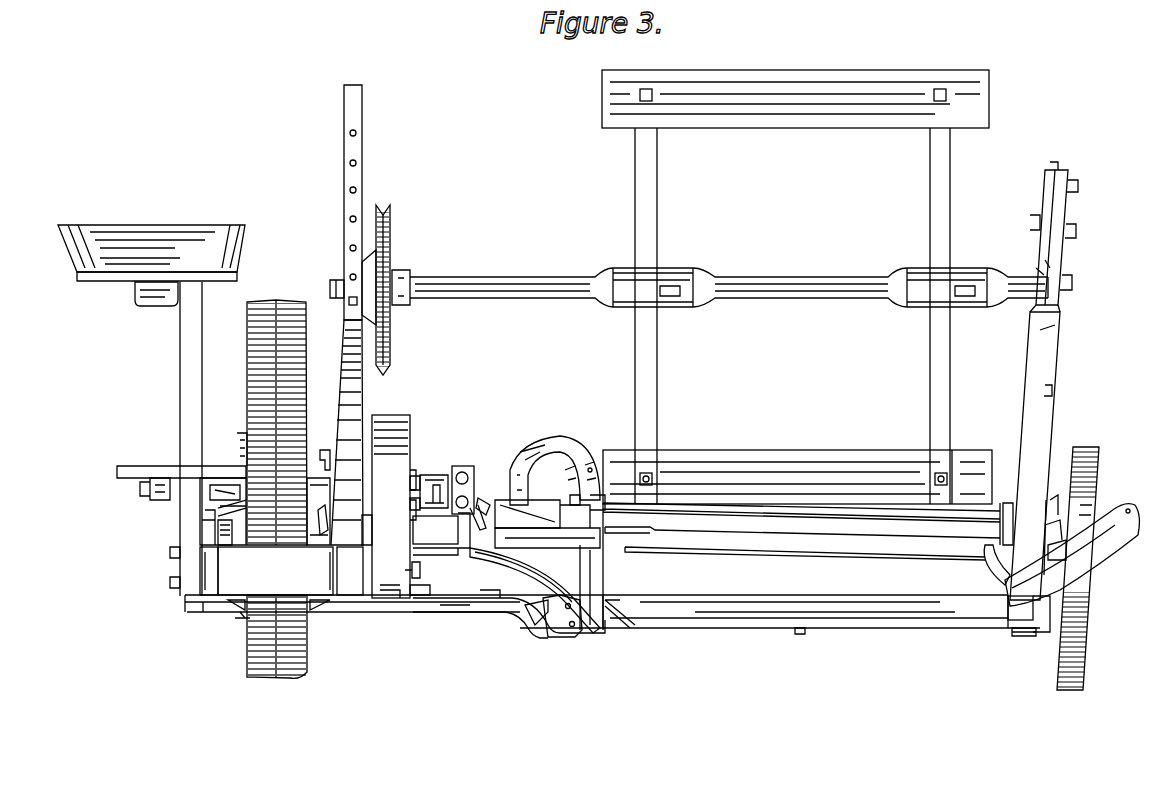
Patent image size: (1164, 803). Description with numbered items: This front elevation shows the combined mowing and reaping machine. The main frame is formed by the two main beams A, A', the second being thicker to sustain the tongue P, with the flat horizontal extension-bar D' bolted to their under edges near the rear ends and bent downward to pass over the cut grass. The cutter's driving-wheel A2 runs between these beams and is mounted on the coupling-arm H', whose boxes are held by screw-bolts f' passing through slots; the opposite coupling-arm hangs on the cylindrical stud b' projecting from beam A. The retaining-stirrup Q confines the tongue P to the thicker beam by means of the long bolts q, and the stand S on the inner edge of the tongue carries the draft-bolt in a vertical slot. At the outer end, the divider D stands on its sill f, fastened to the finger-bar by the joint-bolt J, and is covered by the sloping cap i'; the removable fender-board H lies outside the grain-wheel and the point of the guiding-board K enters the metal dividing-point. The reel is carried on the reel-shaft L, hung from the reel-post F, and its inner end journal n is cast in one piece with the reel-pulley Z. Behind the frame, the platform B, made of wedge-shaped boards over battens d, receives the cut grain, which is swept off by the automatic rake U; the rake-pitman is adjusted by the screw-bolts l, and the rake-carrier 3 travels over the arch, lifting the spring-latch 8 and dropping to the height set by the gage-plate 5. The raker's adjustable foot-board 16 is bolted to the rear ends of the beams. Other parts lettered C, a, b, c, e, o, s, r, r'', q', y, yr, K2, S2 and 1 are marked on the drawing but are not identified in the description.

The cradle C is at (151, 253).
The post a is at (168, 439).
The bar b is at (182, 455).
The cutter's driving-wheel A2 is at (277, 489).
The main beam A is at (266, 571).
The main beam A' is at (346, 571).
The raker's foot-board 16 is at (352, 609).
The clutch mechanism c is at (223, 511).
The cylindrical stud b' is at (231, 532).
The lever K2 is at (232, 510).
The reel-post F is at (344, 202).
The divider's sill f is at (347, 432).
The collar e is at (331, 289).
The reel-pulley Z is at (386, 290).
The reel-shaft L is at (729, 283).
The screw-bolts l is at (795, 99).
The posts o is at (792, 316).
The lower beam s is at (791, 477).
The automatic rake U is at (808, 531).
The platform B is at (780, 611).
The battens d is at (799, 632).
The divider D is at (1051, 324).
The cap i' is at (1035, 452).
The coupling-arm H' is at (1080, 568).
The fender-board H is at (1072, 555).
The guiding-board K is at (997, 564).
The screw-bolts f' is at (1022, 616).
The joint-bolt J is at (1033, 627).
The rod r'' is at (1053, 531).
The inner end journal n is at (1057, 539).
The tongue P is at (394, 506).
The stand S is at (441, 534).
The guide S2 is at (447, 490).
The pin q' is at (415, 486).
The long bolts q is at (417, 570).
The retaining-stirrup Q is at (420, 590).
The rod r is at (480, 508).
The extension-bar D' is at (509, 611).
The bar 1 is at (536, 591).
The block y is at (550, 532).
The spring-latch 8 is at (555, 470).
The gage-plate 5 is at (570, 471).
The rake-carrier 3 is at (575, 494).
The lever yr is at (318, 484).